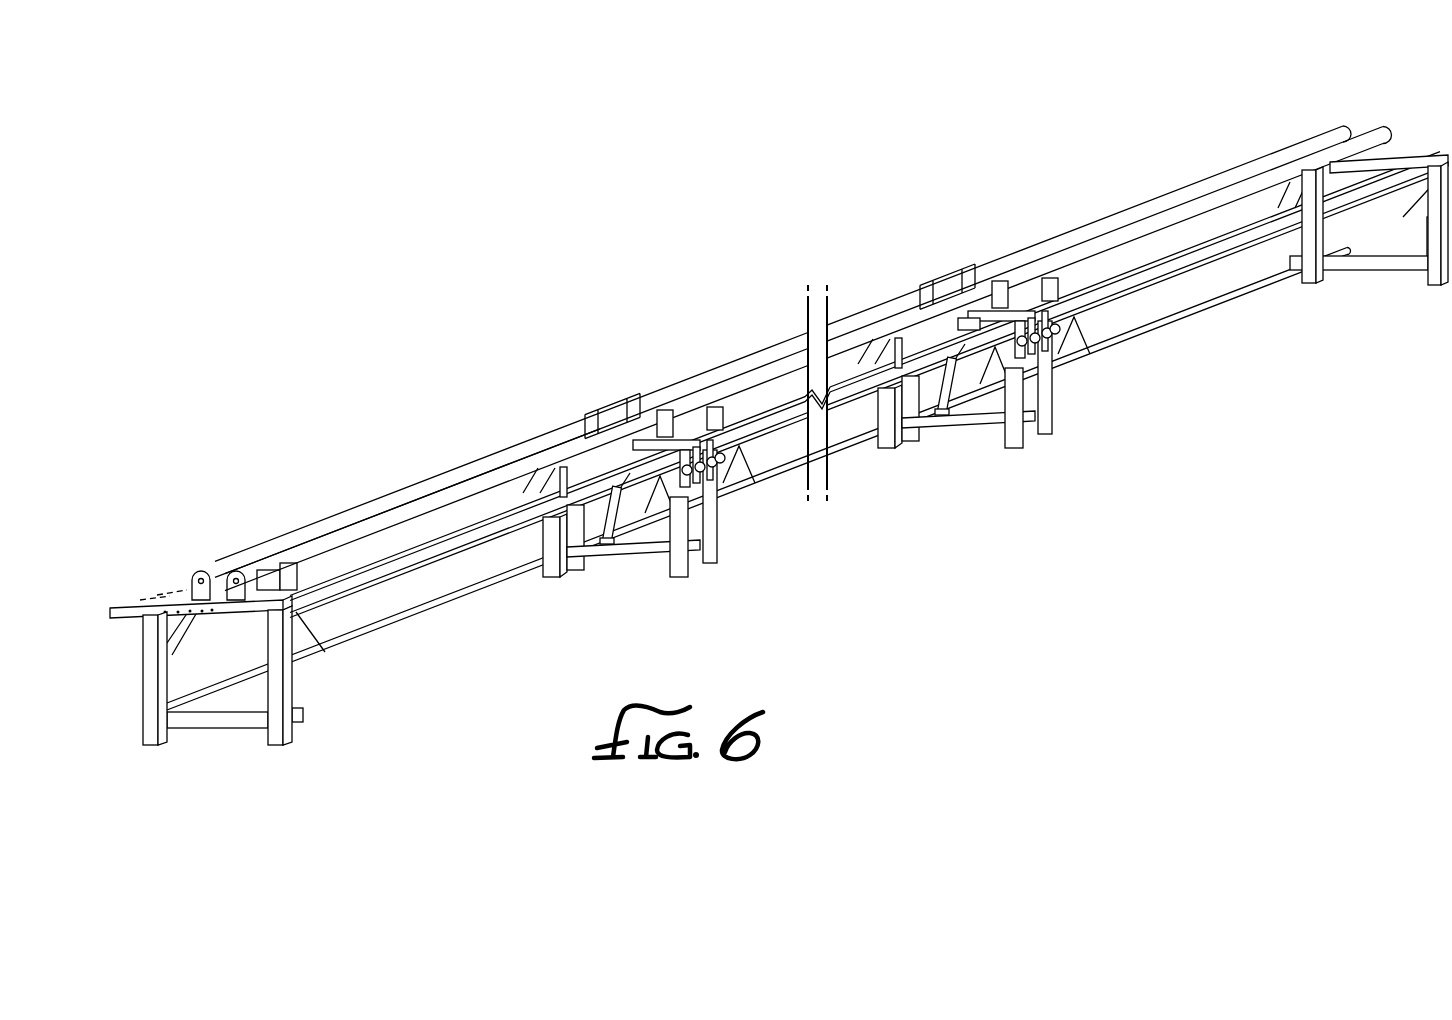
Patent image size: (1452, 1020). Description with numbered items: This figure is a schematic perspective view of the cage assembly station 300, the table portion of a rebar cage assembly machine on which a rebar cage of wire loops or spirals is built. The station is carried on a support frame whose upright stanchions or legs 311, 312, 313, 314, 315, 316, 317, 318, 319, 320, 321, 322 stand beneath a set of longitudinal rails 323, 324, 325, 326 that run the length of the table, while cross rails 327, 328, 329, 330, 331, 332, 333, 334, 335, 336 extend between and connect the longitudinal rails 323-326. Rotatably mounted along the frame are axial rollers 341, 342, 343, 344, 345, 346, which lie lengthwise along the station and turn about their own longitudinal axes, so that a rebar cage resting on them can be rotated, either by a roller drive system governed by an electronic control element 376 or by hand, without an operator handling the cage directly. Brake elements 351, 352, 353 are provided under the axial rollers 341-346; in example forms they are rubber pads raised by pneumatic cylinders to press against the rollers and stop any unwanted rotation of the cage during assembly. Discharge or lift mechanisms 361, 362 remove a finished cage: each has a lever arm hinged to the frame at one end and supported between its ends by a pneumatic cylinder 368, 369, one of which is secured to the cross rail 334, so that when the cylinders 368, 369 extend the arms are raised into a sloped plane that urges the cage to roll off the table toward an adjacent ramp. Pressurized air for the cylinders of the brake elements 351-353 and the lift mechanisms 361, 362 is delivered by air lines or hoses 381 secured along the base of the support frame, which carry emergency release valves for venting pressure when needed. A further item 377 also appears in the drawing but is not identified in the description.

The cage assembly station 300 is at (627, 233).
The leg 311 is at (150, 718).
The leg 312 is at (287, 688).
The leg 313 is at (550, 577).
The leg 314 is at (678, 577).
The leg 315 is at (585, 570).
The leg 316 is at (713, 540).
The leg 317 is at (878, 448).
The leg 318 is at (1007, 448).
The leg 319 is at (920, 441).
The leg 320 is at (1045, 412).
The leg 321 is at (1307, 283).
The leg 322 is at (1434, 285).
The longitudinal rail 323 is at (375, 562).
The longitudinal rail 324 is at (187, 592).
The longitudinal rail 325 is at (842, 390).
The longitudinal rail 326 is at (1213, 252).
The cross rail 327 is at (255, 613).
The cross rail 328 is at (637, 448).
The cross rail 329 is at (677, 440).
The cross rail 330 is at (972, 326).
The cross rail 331 is at (1010, 310).
The cross rail 332 is at (1405, 150).
The cross rail 333 is at (228, 728).
The cross rail 334 is at (650, 557).
The cross rail 335 is at (985, 428).
The cross rail 336 is at (1372, 270).
The axial roller 341 is at (415, 487).
The axial roller 342 is at (468, 490).
The axial roller 343 is at (752, 363).
The axial roller 344 is at (777, 368).
The axial roller 345 is at (1178, 195).
The axial roller 346 is at (1237, 193).
The brake element 351 is at (310, 570).
The brake element 352 is at (722, 405).
The brake element 353 is at (1066, 278).
The lift mechanism 361 is at (720, 473).
The lift mechanism 362 is at (1053, 340).
The pneumatic cylinder 368 is at (620, 510).
The pneumatic cylinder 369 is at (955, 378).
The electronic control element 376 is at (120, 627).
The hoses 377 is at (158, 597).
The air lines 381 is at (440, 621).